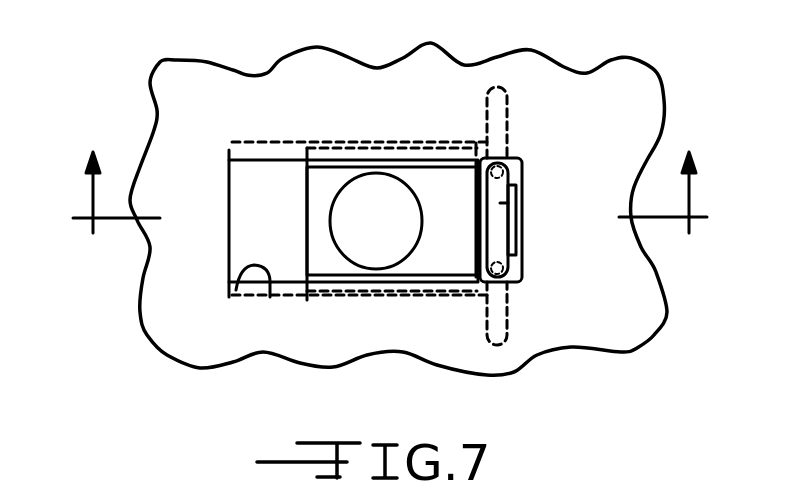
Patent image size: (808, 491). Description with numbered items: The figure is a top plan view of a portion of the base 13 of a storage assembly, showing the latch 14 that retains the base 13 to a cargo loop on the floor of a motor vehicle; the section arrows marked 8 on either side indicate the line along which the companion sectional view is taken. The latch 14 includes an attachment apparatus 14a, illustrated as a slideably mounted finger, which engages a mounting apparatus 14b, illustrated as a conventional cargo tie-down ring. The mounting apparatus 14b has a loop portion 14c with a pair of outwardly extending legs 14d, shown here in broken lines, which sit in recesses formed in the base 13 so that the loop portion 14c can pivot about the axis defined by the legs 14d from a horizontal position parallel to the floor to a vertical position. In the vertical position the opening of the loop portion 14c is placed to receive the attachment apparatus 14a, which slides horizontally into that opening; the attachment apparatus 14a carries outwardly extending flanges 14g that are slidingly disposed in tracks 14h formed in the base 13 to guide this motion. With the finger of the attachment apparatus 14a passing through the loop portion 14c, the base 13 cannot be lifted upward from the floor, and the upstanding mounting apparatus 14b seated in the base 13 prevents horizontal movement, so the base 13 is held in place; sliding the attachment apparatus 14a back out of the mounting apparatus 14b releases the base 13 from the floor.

The section line 8- 8 is at (391, 202).
The base 13 is at (662, 95).
The latch 14 is at (303, 115).
The attachment apparatus 14a is at (520, 225).
The mounting apparatus 14b is at (488, 228).
The loop portion 14c is at (520, 195).
The legs 14d is at (509, 147).
The flanges 14g is at (333, 292).
The tracks 14h is at (236, 290).